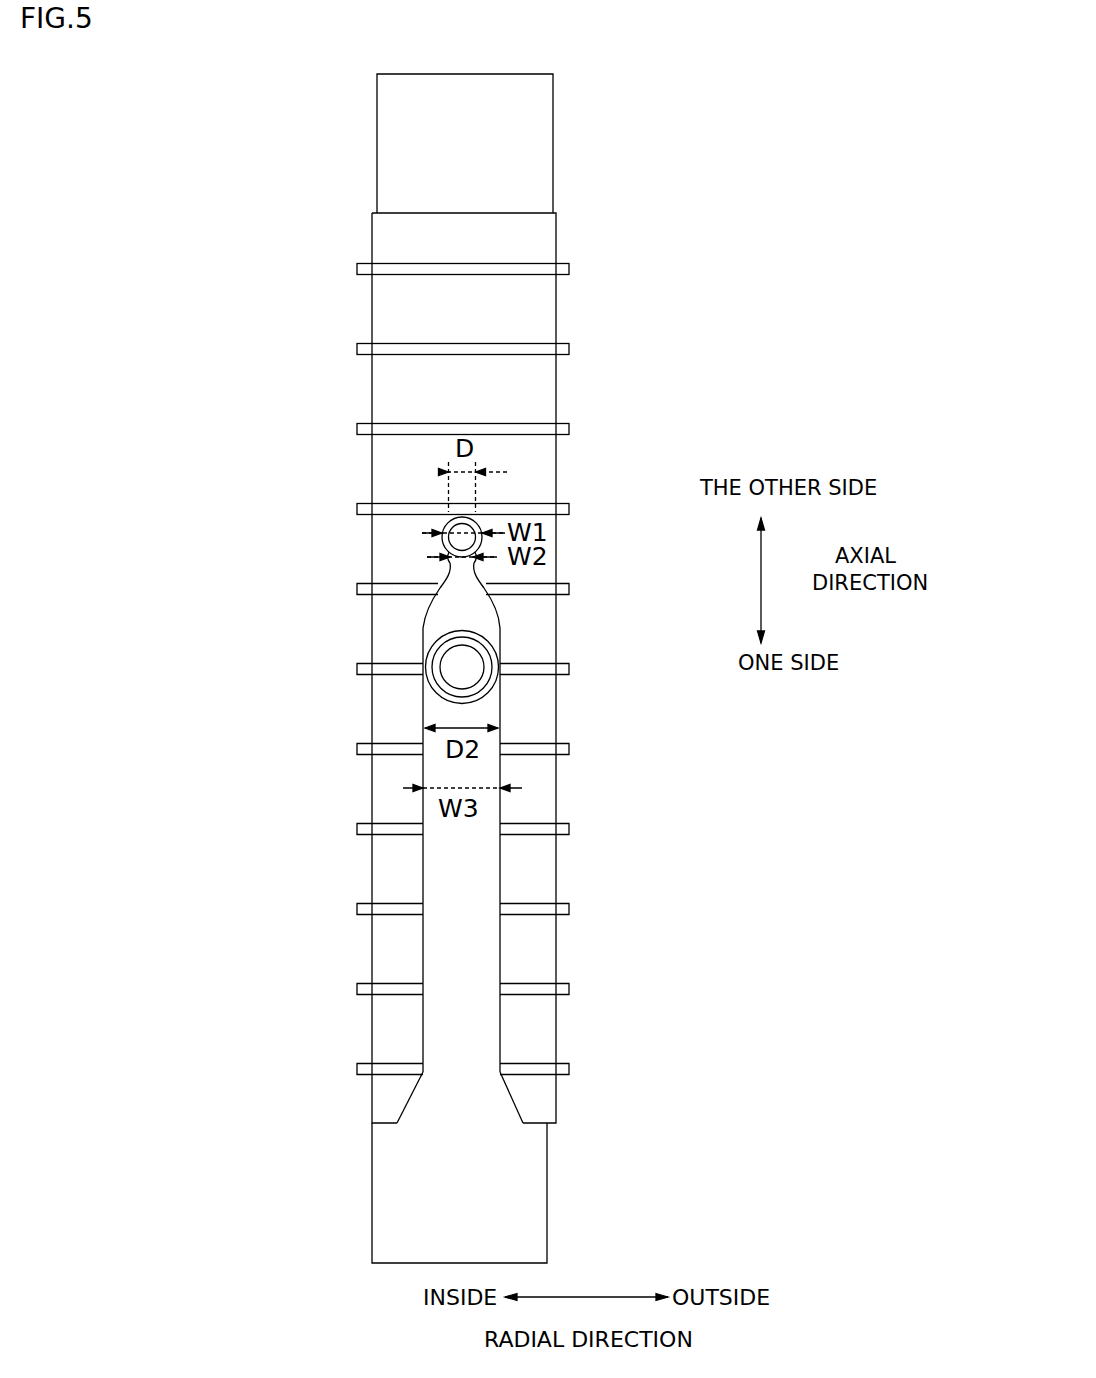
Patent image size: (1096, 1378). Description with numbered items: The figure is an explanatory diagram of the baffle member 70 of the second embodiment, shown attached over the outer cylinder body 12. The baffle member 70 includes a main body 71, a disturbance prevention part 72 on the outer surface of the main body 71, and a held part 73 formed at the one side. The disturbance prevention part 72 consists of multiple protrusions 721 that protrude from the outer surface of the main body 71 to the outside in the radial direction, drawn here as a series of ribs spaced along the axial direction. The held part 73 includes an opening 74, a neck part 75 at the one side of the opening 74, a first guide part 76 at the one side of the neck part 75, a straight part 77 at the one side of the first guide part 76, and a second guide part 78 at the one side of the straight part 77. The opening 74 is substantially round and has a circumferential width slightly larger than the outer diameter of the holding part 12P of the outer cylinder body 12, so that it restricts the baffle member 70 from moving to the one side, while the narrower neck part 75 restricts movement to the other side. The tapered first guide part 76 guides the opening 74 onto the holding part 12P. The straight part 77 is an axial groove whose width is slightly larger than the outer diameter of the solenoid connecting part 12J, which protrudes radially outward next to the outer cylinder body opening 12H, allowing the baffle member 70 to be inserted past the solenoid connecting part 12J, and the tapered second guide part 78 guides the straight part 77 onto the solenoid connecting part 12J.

The outer cylinder body 12 is at (377, 122).
The holding part 12P is at (462, 530).
The outer cylinder body opening 12H is at (474, 652).
The solenoid connecting part 12J is at (490, 698).
The baffle member 70 is at (445, 648).
The main body 71 is at (372, 310).
The disturbance prevention part 72 is at (473, 671).
The protrusions 721 is at (569, 268).
The held part 73 is at (363, 820).
The opening 74 is at (442, 542).
The neck part 75 is at (450, 565).
The first guide part 76 is at (438, 600).
The straight part 77 is at (424, 860).
The second guide part 78 is at (390, 1087).